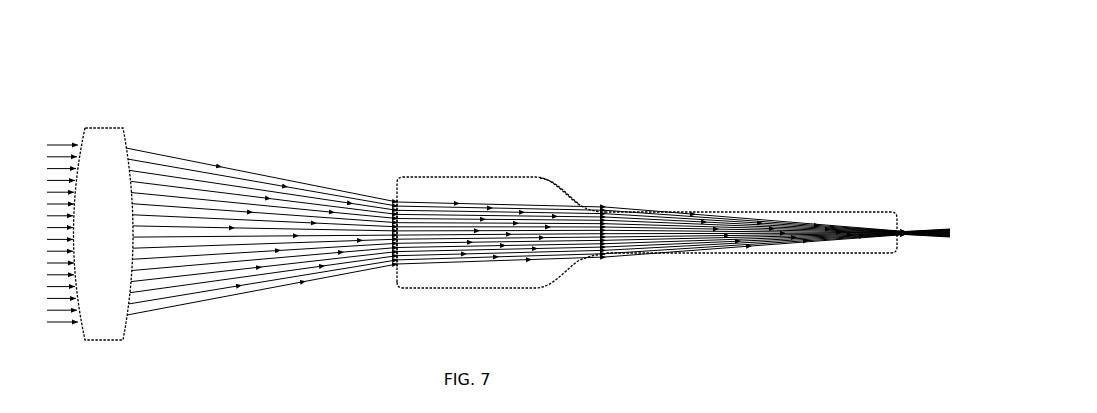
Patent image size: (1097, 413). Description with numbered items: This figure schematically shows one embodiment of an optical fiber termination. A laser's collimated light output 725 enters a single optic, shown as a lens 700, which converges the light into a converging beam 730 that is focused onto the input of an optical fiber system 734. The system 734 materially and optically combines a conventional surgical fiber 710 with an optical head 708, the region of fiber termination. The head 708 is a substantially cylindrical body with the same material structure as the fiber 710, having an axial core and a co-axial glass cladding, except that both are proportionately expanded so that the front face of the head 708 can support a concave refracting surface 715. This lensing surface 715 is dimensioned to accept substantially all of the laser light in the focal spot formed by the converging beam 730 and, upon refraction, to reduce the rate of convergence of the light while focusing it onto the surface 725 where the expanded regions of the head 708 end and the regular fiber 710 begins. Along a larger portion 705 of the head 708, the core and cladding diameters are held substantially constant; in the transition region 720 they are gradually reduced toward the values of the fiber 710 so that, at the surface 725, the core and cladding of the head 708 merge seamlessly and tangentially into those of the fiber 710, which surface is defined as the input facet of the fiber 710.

The lens 700 is at (104, 234).
The larger portion of the head 705 is at (397, 176).
The optical head 708 is at (397, 109).
The optical fiber 710 is at (605, 190).
The concave refracting surface 715 is at (404, 269).
The transition region 720 is at (579, 190).
The collimated light output 725 is at (690, 190).
The converging beam 730 is at (538, 231).
The optical fiber system 734 is at (651, 58).